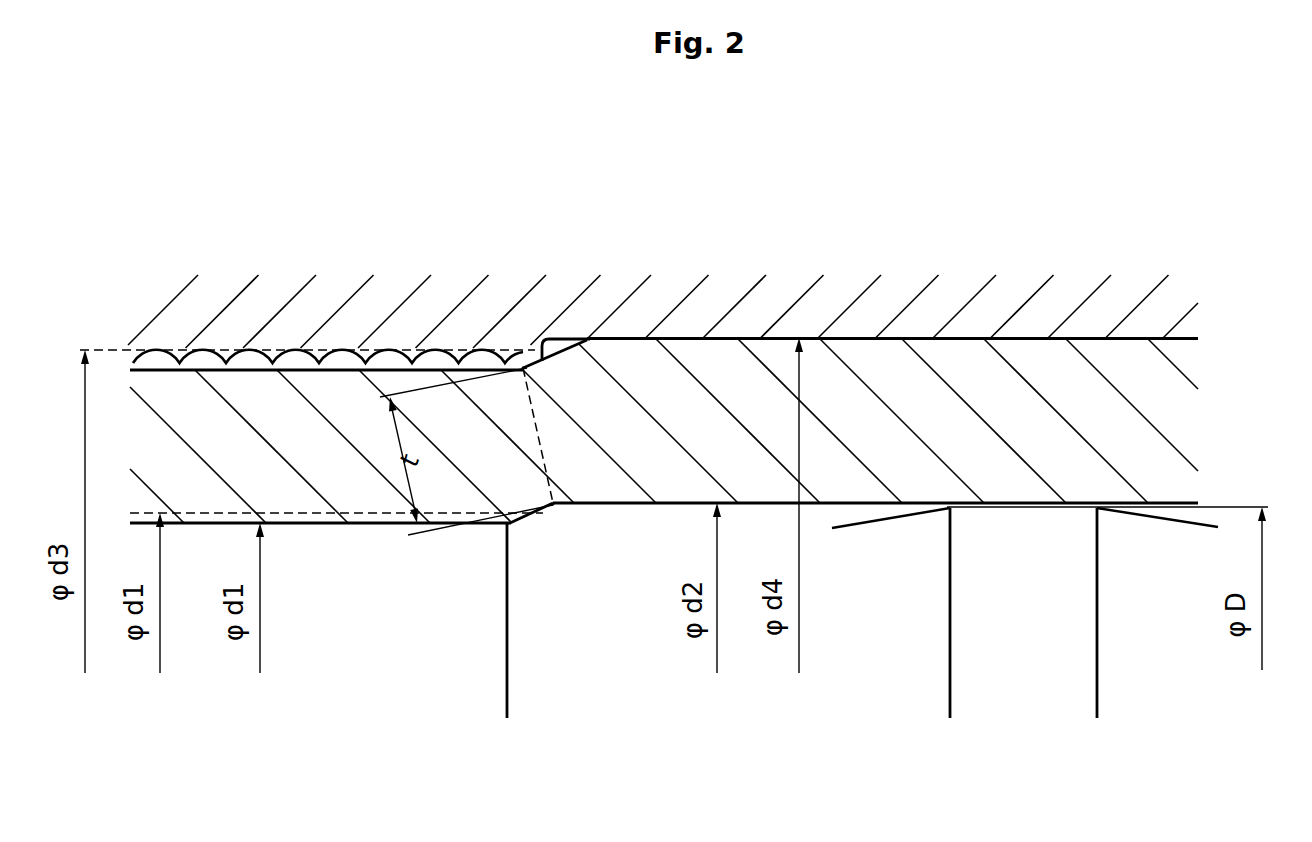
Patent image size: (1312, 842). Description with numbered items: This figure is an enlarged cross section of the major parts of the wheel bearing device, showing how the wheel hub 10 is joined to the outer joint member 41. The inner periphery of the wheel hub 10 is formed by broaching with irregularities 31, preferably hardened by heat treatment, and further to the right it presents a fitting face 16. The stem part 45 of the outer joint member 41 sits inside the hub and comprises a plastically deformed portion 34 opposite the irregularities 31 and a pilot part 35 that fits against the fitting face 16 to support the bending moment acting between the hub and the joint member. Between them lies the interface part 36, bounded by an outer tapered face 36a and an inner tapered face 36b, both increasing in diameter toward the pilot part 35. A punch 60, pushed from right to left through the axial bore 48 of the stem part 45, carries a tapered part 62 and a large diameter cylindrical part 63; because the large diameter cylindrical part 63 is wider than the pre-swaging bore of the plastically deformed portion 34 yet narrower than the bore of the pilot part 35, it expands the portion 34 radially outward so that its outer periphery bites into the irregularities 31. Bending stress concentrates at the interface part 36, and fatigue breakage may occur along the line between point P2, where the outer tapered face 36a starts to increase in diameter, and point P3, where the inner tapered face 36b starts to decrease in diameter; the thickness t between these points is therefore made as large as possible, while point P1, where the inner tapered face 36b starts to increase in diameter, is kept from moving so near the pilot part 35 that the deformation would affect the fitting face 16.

The wheel hub 10 is at (330, 247).
The fitting face 16 is at (693, 338).
The irregularities 31 is at (133, 363).
The plastically deformed portion 34 is at (333, 480).
The pilot part 35 is at (670, 490).
The interface part 36 is at (518, 500).
The outer tapered face 36a is at (567, 347).
The inner tapered face 36b is at (537, 515).
The outer joint member 41 is at (1200, 422).
The stem part 45 is at (1088, 388).
The axial bore 48 is at (568, 704).
The punch 60 is at (1031, 663).
The tapered part 62 is at (870, 521).
The large diameter cylindrical part 63 is at (1012, 505).
The point P1 is at (500, 536).
The point P2 is at (522, 366).
The point P3 is at (563, 518).